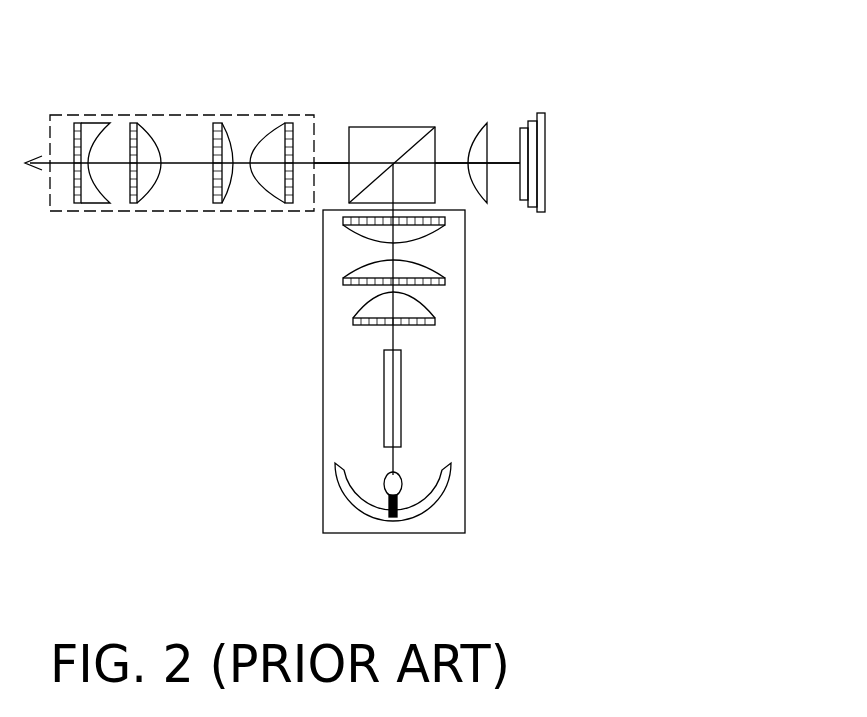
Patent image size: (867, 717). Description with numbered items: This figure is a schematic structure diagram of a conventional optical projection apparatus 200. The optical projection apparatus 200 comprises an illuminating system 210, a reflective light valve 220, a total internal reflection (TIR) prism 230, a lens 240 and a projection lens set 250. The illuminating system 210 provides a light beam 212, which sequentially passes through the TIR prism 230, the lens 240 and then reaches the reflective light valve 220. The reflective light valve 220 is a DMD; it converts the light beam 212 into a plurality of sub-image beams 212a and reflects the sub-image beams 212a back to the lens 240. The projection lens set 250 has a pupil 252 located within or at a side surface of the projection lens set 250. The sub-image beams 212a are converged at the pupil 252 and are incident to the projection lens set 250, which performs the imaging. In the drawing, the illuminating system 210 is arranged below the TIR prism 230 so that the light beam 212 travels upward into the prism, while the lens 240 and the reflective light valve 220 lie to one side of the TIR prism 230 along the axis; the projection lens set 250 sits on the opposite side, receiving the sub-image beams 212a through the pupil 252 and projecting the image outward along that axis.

The optical projection apparatus 200 is at (613, 592).
The illuminating system 210 is at (465, 304).
The light beam 212 is at (395, 182).
The sub-image beams 212a is at (503, 162).
The reflective light valve 220 is at (546, 163).
The total internal reflection (TIR) prism 230 is at (393, 126).
The lens 240 is at (483, 125).
The projection lens set 250 is at (194, 113).
The pupil 252 is at (318, 158).